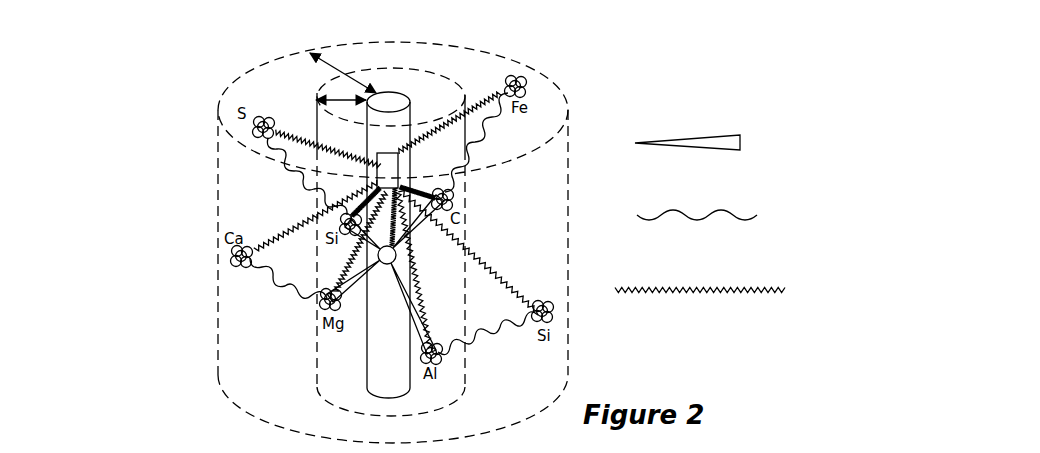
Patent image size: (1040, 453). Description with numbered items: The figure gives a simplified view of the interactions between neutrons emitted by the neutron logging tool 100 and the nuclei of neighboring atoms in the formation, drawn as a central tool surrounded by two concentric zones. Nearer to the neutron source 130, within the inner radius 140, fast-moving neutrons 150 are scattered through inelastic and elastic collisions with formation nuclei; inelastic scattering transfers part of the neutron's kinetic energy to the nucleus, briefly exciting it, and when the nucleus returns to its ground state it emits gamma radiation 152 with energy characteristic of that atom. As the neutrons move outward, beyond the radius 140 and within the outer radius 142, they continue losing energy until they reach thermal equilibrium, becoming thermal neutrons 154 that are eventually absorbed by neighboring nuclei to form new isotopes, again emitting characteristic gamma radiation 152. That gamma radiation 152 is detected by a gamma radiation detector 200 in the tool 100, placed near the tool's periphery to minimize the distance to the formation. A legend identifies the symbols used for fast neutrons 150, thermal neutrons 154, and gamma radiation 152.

The tool 100 is at (405, 83).
The neutron source 130 is at (397, 258).
The radius 140 is at (340, 100).
The radius 142 is at (340, 68).
The gamma radiation detector 200 is at (388, 155).
The fast-moving neutrons 150 is at (698, 157).
The gamma radiation 152 is at (700, 303).
The thermal neutrons 154 is at (695, 228).